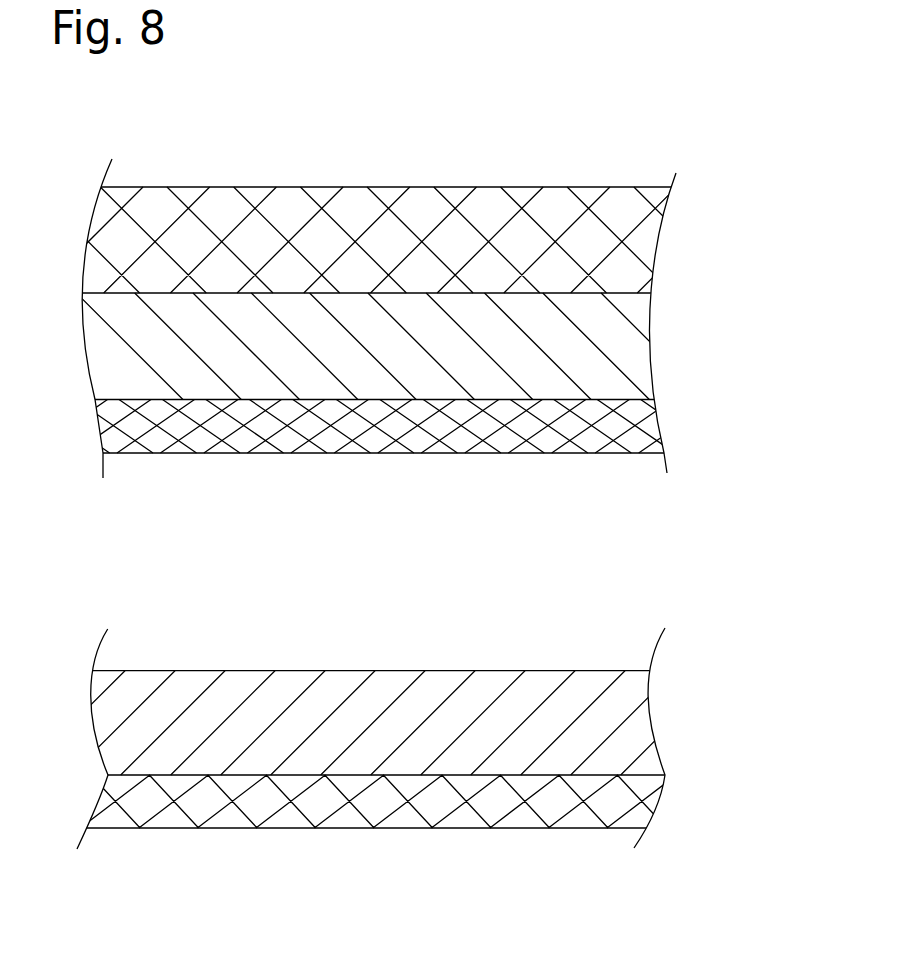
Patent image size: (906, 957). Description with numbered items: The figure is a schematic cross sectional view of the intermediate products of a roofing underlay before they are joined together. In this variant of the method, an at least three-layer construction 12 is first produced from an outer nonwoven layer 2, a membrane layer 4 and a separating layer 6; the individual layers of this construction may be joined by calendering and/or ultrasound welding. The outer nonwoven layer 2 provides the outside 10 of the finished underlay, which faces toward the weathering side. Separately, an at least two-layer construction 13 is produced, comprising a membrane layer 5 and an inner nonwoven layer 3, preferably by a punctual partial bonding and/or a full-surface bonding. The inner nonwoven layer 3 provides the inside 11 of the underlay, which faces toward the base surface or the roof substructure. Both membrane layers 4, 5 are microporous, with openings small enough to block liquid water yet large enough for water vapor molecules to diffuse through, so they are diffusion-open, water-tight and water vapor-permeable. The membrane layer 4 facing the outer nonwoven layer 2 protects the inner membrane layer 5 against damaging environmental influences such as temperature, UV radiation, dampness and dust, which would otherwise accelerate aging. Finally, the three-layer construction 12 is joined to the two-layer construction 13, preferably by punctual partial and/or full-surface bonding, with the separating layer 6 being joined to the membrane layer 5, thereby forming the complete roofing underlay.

The outer nonwoven layer 2 is at (603, 249).
The inner nonwoven layer 3 is at (603, 802).
The membrane layer 4 is at (603, 349).
The membrane layer 5 is at (603, 729).
The separating layer 6 is at (603, 425).
The outside 10 is at (455, 187).
The inside 11 is at (518, 845).
The three-layer construction 12 is at (691, 102).
The two-layer construction 13 is at (693, 586).